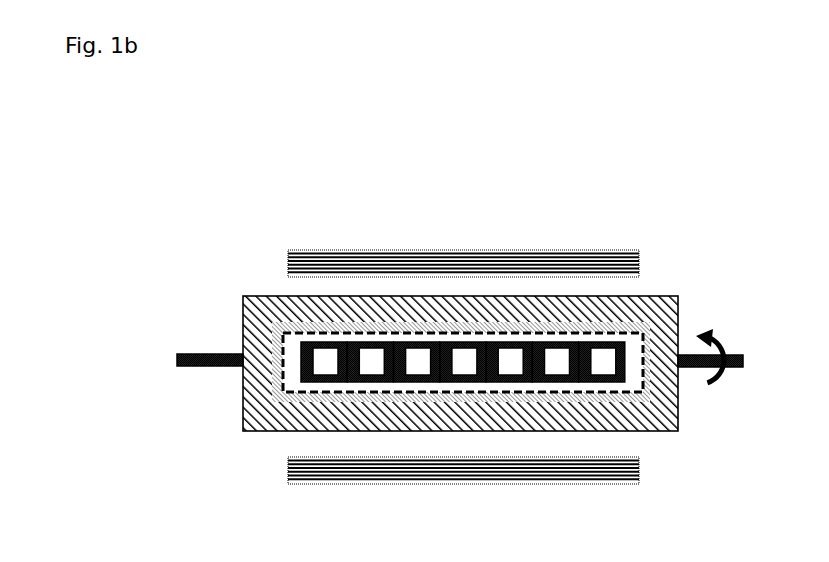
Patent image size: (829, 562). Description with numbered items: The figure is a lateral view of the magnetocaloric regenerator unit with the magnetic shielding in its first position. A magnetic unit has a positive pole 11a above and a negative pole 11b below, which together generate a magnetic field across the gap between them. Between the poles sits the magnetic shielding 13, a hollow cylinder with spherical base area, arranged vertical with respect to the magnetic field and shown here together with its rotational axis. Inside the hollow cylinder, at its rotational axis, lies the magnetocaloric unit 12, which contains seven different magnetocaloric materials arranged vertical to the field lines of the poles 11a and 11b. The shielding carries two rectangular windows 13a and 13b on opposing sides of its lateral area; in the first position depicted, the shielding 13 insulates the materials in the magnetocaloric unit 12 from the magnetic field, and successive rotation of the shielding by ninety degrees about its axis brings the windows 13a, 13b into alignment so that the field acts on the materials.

The positive pole 11a is at (427, 259).
The negative pole 11b is at (377, 483).
The magnetocaloric unit 12 is at (590, 348).
The magnetic shielding 13 is at (259, 303).
The rectangular window 13a is at (285, 404).
The rectangular window 13b is at (281, 353).